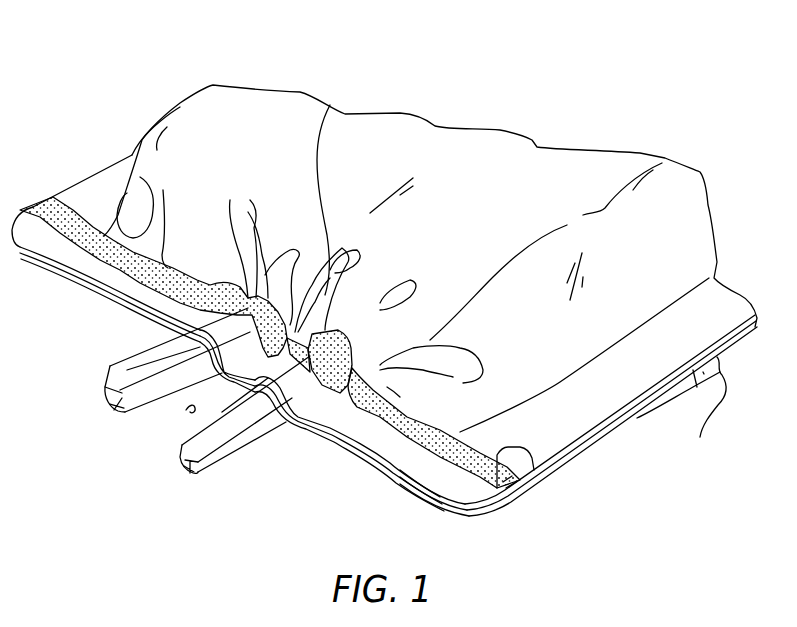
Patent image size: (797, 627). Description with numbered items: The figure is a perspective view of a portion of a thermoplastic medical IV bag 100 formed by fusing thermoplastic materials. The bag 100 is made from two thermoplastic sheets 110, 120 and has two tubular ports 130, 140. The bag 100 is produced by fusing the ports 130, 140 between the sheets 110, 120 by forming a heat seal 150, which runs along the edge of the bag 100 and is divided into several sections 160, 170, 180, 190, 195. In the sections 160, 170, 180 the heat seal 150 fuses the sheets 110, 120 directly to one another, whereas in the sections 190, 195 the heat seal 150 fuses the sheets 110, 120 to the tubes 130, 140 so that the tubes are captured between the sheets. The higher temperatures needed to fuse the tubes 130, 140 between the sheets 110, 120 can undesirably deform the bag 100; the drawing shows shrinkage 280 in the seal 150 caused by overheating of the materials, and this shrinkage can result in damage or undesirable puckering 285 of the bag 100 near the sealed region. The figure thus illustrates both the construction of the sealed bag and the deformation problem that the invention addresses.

The thermoplastic medical IV bag 100 is at (487, 106).
The thermoplastic sheet 110 is at (716, 214).
The thermoplastic sheet 120 is at (384, 335).
The tubular port 130 is at (110, 366).
The tubular port 140 is at (218, 445).
The heat seal 150 is at (505, 488).
The heat seal section 160 is at (67, 223).
The heat seal section 170 is at (330, 105).
The heat seal section 180 is at (532, 461).
The heat seal section 190 is at (187, 337).
The heat seal section 195 is at (358, 390).
The shrinkage 280 is at (186, 410).
The puckering 285 is at (250, 203).